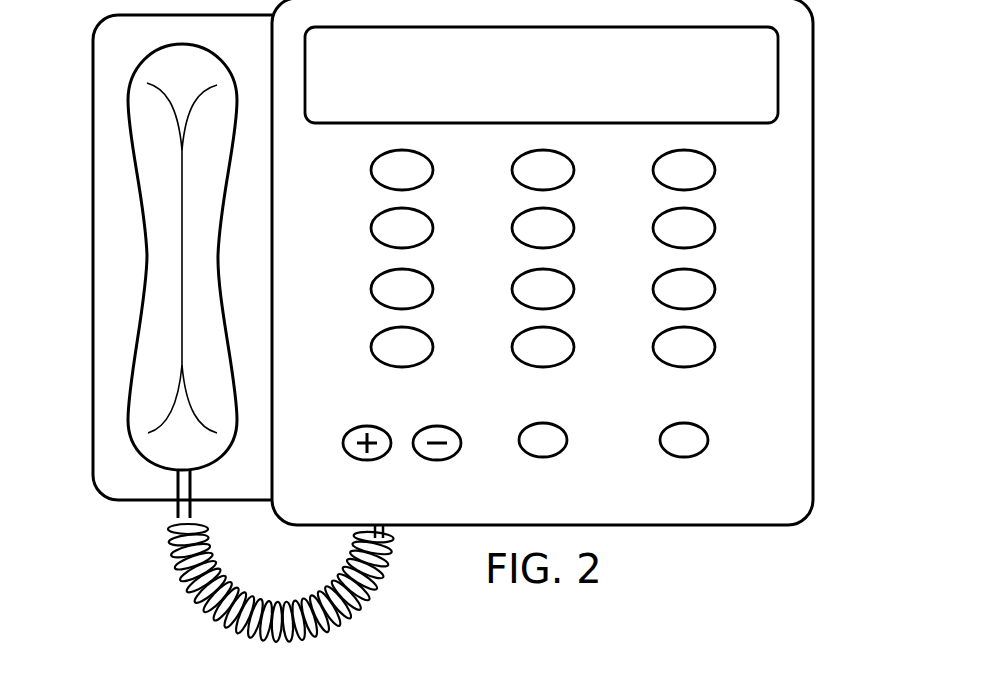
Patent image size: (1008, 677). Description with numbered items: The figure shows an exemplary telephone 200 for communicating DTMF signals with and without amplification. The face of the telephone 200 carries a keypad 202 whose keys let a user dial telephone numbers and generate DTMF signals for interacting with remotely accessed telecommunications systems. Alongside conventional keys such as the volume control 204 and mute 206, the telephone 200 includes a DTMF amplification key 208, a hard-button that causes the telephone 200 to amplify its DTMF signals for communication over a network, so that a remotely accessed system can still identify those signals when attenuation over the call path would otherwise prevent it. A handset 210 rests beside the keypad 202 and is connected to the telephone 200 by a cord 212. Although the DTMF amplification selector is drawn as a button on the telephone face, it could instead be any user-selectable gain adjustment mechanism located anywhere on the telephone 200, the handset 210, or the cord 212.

The telephone 200 is at (814, 205).
The keypad 202 is at (731, 143).
The volume control 204 is at (466, 467).
The mute 206 is at (556, 455).
The DTMF amplification key 208 is at (697, 455).
The handset 210 is at (148, 260).
The cord 212 is at (174, 566).